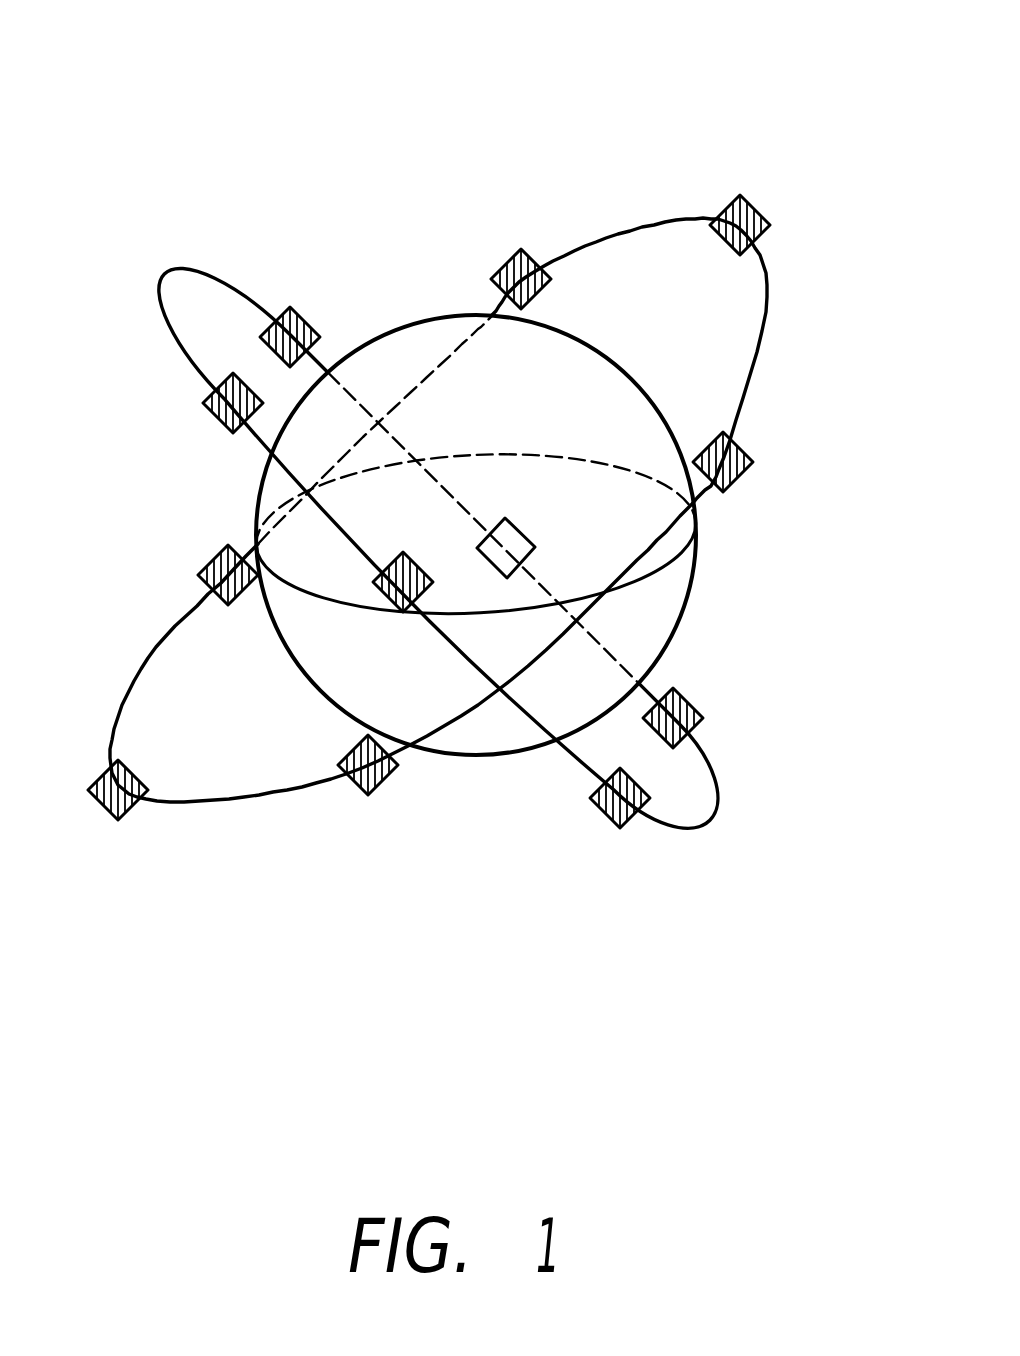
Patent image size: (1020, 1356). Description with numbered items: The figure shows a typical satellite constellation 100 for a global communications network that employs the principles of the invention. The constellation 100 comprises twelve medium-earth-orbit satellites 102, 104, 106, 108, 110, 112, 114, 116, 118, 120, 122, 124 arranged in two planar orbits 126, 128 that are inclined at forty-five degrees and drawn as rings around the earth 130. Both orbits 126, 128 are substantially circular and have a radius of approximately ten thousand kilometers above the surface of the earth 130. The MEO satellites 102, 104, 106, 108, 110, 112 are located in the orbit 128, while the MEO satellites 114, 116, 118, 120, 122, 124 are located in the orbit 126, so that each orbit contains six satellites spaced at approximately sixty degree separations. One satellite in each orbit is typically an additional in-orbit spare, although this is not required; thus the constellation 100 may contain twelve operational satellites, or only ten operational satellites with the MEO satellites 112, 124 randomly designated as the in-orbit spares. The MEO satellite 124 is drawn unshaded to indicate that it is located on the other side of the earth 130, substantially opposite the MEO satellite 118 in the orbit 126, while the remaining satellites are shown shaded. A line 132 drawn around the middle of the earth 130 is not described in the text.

The constellation 100 is at (320, 126).
The MEO satellite 102 is at (757, 212).
The MEO satellite 104 is at (510, 263).
The MEO satellite 106 is at (210, 560).
The MEO satellite 108 is at (95, 793).
The MEO satellite 110 is at (382, 783).
The MEO satellite 112 is at (752, 470).
The MEO satellite 114 is at (303, 318).
The MEO satellite 116 is at (212, 408).
The MEO satellite 118 is at (423, 560).
The MEO satellite 120 is at (600, 815).
The MEO satellite 122 is at (700, 722).
The MEO satellite 124 is at (525, 535).
The orbit 126 is at (625, 228).
The orbit 128 is at (145, 662).
The earth 130 is at (677, 632).
The equator 132 is at (665, 565).